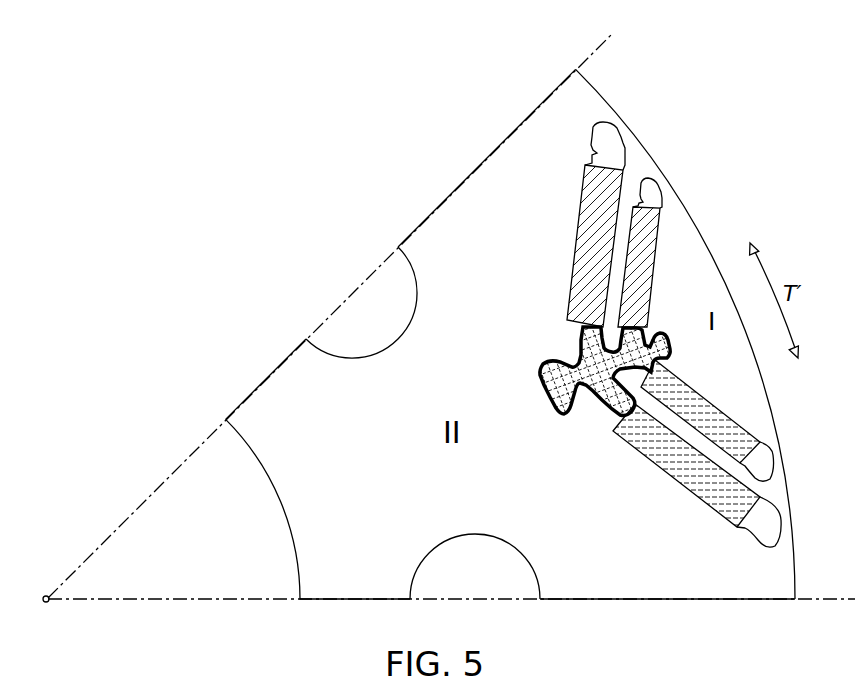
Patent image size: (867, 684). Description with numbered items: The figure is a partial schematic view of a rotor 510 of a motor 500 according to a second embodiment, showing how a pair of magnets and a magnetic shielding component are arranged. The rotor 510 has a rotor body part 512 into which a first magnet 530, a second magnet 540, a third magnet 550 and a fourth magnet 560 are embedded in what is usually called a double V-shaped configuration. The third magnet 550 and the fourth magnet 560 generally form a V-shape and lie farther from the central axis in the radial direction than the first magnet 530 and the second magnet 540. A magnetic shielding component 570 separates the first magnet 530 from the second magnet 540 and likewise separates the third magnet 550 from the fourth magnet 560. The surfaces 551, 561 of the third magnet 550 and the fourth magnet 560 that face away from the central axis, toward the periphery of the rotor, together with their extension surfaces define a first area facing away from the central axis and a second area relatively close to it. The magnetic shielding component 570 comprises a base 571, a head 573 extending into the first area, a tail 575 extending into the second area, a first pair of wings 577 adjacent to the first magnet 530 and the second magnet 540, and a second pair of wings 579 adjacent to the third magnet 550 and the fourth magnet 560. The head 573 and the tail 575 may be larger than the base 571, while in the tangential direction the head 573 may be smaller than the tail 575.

The motor 500 is at (651, 46).
The rotor 510 is at (646, 136).
The rotor body part 512 is at (348, 491).
The first magnet 530 is at (595, 220).
The second magnet 540 is at (705, 485).
The third magnet 550 is at (640, 257).
The surface of the third magnet 551 is at (660, 237).
The fourth magnet 560 is at (695, 415).
The surface of the fourth magnet 561 is at (745, 430).
The magnetic shielding component 570 is at (681, 349).
The base 571 is at (585, 410).
The head 573 is at (672, 360).
The tail 575 is at (547, 395).
The first pair of wings 577 is at (582, 345).
The second pair of wings 579 is at (640, 330).